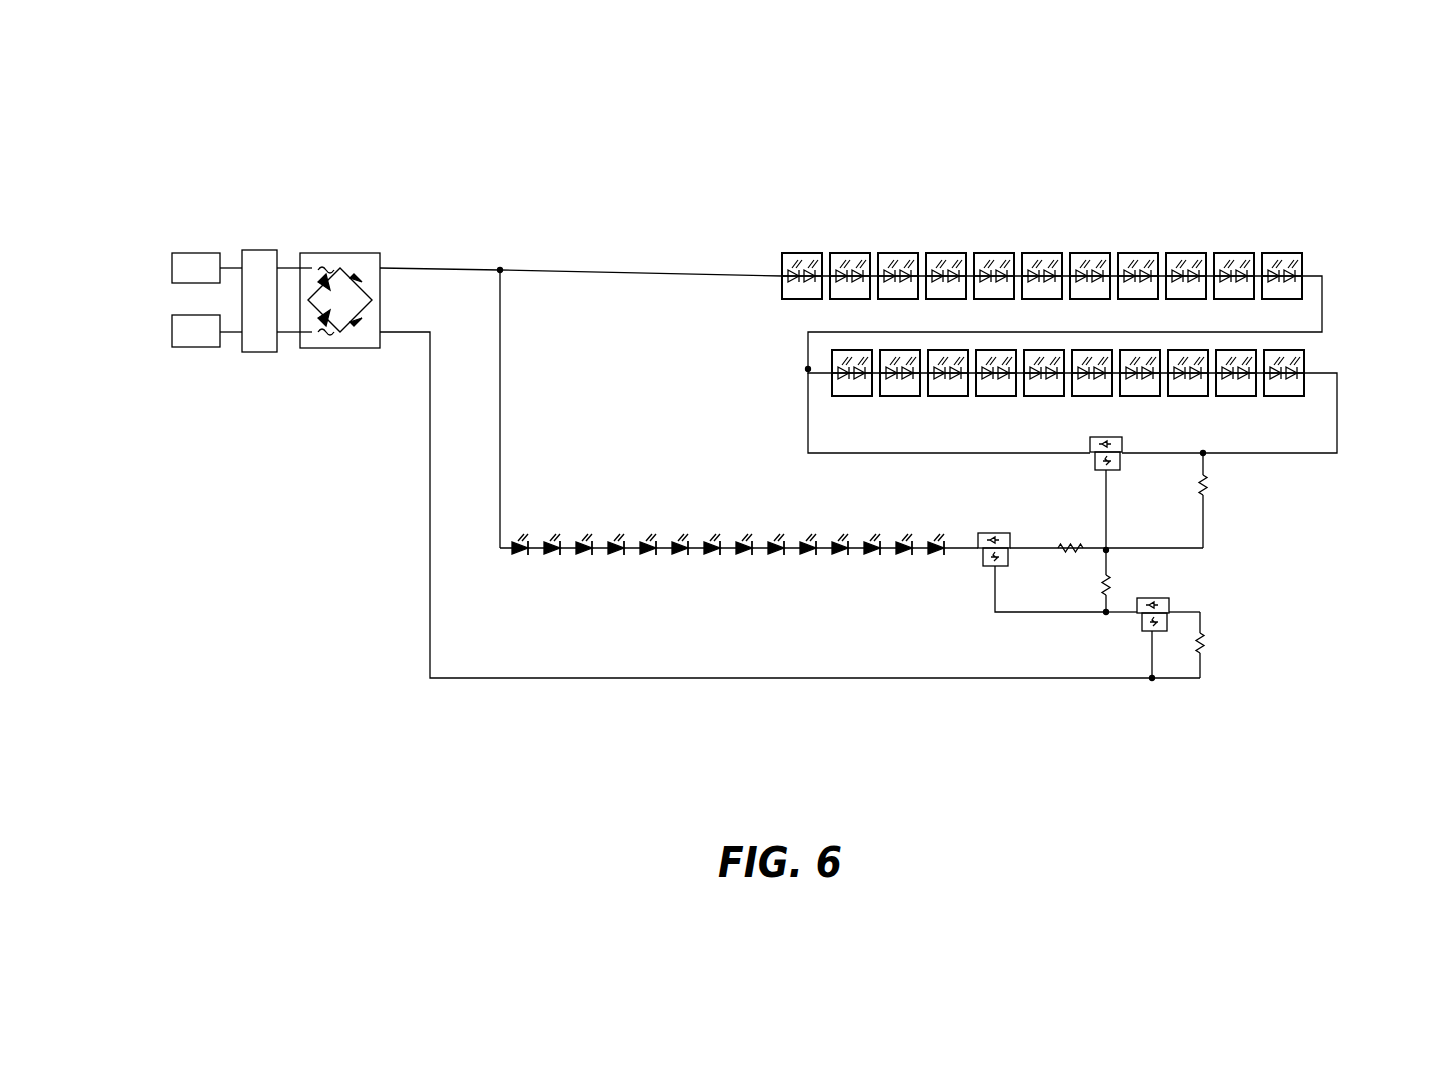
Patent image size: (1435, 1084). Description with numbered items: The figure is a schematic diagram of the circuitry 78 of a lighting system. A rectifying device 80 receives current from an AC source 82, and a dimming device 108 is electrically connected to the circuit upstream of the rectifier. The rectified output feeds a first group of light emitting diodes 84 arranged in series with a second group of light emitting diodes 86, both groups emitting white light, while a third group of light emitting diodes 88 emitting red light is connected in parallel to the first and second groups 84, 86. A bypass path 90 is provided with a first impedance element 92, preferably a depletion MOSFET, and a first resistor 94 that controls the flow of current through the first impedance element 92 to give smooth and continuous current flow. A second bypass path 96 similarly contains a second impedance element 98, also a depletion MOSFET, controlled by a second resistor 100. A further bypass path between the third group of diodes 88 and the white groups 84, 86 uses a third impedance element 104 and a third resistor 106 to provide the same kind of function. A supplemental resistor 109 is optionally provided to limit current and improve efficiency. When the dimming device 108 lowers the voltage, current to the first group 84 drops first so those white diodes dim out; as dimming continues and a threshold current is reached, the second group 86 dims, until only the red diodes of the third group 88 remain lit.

The circuitry 78 is at (730, 198).
The rectifying device 80 is at (340, 253).
The AC source 82 is at (174, 194).
The first group of light emitting diodes 84 is at (1132, 199).
The second group of light emitting diodes 86 is at (1340, 358).
The third group of light emitting diodes 88 is at (750, 508).
The bypass path 90 is at (1017, 500).
The first impedance element 92 is at (1122, 440).
The first resistor 94 is at (1205, 490).
The second bypass path 96 is at (1295, 598).
The second impedance element 98 is at (1152, 600).
The second resistor 100 is at (1203, 653).
The third impedance element 104 is at (990, 533).
The third resistor 106 is at (1100, 582).
The dimming device 108 is at (260, 250).
The supplemental resistor 109 is at (1078, 548).